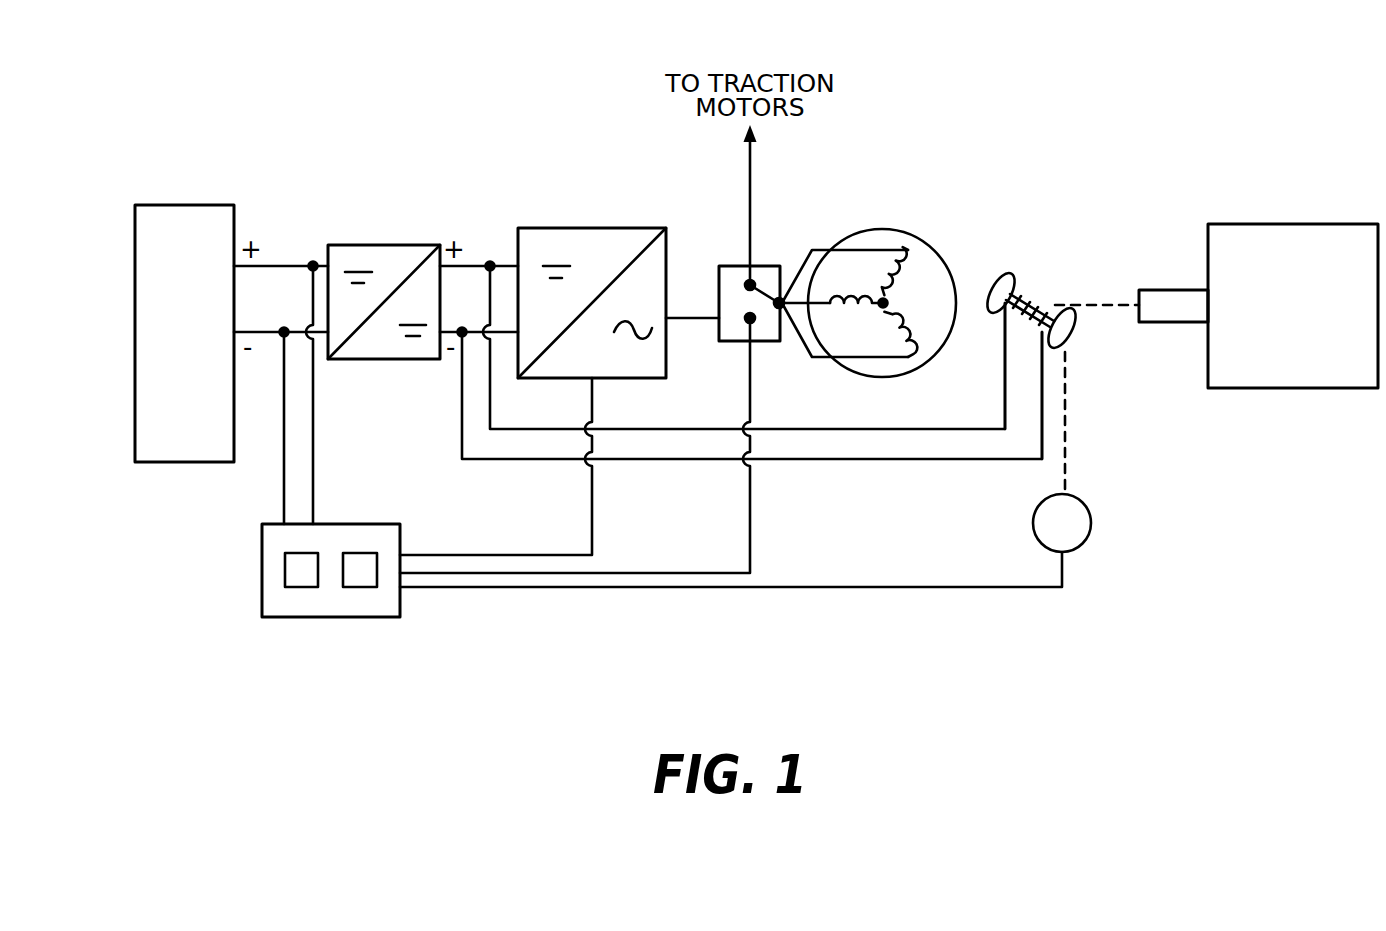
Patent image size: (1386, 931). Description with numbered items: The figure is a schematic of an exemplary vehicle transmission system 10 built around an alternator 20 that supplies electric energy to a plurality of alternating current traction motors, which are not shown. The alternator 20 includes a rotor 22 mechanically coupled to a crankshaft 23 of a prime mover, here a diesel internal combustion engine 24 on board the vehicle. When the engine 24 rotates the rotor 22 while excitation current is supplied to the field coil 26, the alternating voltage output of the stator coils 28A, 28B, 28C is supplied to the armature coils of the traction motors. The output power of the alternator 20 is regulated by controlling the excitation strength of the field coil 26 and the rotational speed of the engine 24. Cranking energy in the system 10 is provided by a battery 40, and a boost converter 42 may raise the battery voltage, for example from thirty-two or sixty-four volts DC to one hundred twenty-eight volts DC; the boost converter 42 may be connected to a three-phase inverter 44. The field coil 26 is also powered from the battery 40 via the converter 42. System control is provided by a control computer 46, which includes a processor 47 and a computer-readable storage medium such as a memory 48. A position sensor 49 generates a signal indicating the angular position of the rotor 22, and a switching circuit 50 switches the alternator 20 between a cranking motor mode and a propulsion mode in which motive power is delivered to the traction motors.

The transmission system 10 is at (828, 32).
The battery 40 is at (194, 205).
The boost converter 42 is at (376, 245).
The three-phase inverter 44 is at (579, 228).
The switching circuit 50 is at (731, 266).
The alternator 20 is at (895, 229).
The stator coil 28A is at (855, 293).
The stator coil 28B is at (907, 284).
The stator coil 28C is at (887, 333).
The field coil 26 is at (1040, 306).
The rotor 22 is at (1077, 333).
The crankshaft 23 is at (1172, 290).
The diesel internal combustion engine 24 is at (1263, 224).
The position sensor 49 is at (1090, 515).
The control computer 46 is at (376, 524).
The processor 47 is at (292, 588).
The memory 48 is at (357, 588).